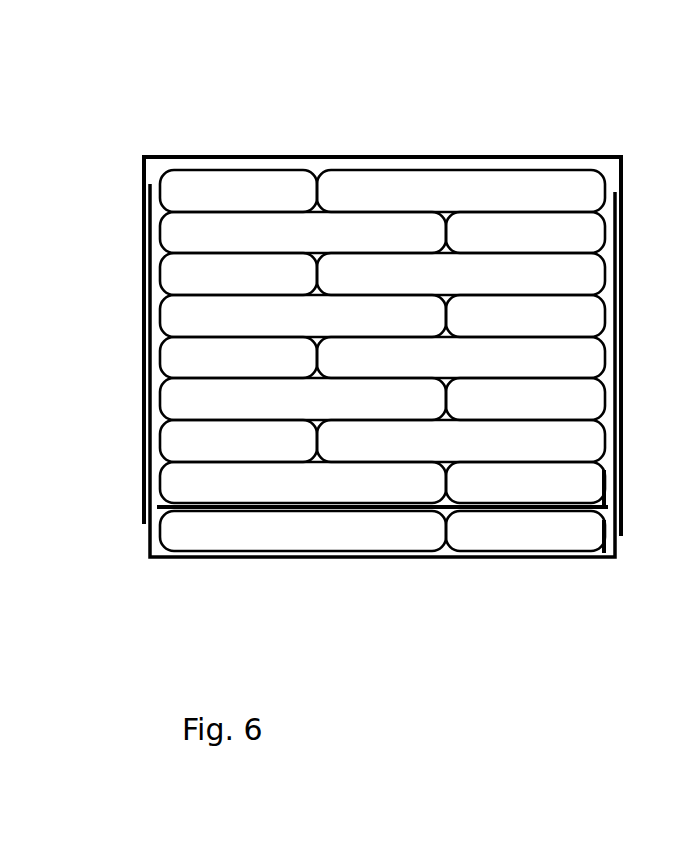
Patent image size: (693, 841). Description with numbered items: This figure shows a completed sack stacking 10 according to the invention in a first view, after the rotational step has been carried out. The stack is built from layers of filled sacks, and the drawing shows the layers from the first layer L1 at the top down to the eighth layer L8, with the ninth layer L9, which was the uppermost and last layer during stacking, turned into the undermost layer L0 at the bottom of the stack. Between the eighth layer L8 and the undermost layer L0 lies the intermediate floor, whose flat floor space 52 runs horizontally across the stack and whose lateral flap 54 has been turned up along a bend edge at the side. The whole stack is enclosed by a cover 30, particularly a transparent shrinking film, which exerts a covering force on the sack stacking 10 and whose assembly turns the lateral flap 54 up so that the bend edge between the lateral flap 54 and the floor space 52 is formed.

The sack stacking 10 is at (353, 88).
The cover 30 is at (213, 157).
The floor space 52 is at (388, 507).
The lateral flap 54 is at (622, 484).
The undermost layer L0 is at (174, 535).
The first layer L1 is at (599, 189).
The eighth layer L8 is at (174, 487).
The ninth layer L9 is at (597, 543).